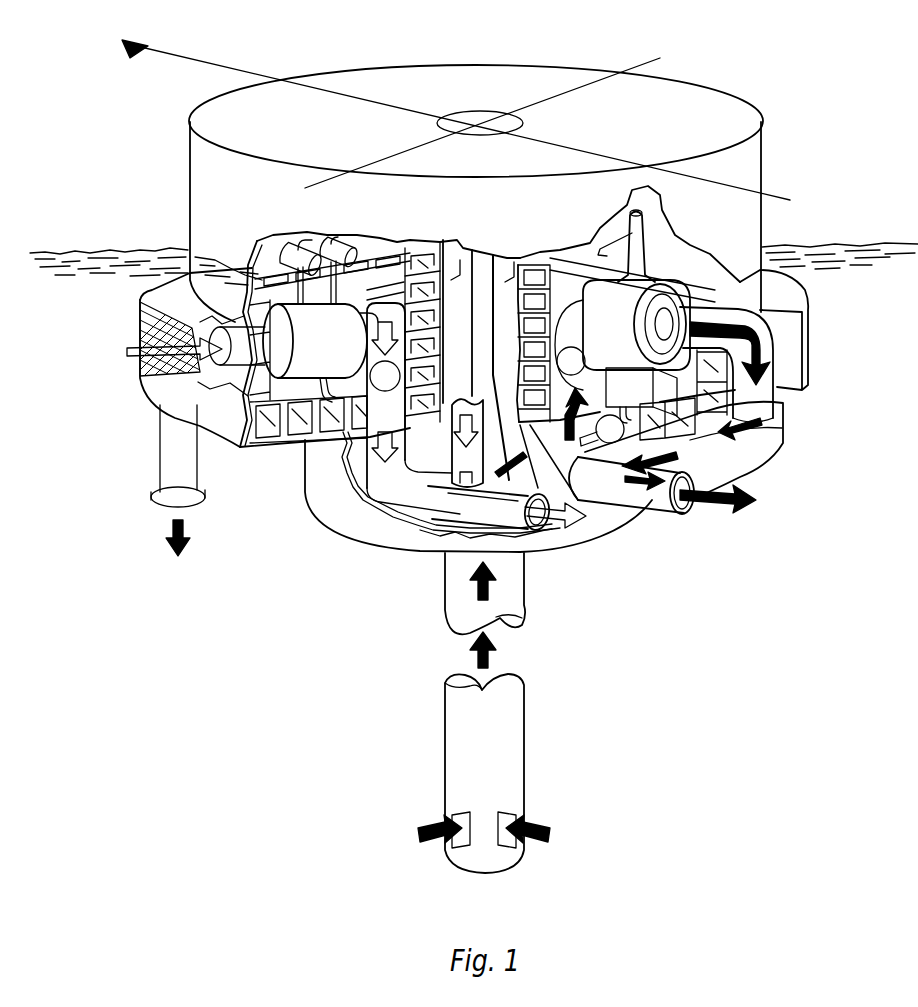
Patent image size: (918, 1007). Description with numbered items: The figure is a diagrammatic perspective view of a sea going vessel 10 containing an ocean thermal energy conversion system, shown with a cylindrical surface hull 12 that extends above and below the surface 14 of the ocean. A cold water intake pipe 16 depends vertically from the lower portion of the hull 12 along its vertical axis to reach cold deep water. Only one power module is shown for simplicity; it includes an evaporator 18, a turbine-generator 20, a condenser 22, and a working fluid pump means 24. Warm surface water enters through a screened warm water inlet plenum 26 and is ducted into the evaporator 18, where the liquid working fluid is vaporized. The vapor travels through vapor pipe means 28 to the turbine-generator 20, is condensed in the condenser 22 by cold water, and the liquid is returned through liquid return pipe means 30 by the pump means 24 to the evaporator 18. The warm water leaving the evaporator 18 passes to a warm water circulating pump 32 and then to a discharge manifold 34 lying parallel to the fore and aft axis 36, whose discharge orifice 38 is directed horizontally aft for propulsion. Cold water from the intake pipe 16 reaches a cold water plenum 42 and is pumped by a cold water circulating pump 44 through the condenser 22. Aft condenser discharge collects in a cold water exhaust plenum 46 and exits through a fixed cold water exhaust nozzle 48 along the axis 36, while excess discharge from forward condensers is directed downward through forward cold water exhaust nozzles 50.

The sea going vessel 10 is at (487, 50).
The cylindrical surface hull 12 is at (738, 111).
The surface of the ocean 14 is at (128, 242).
The cold water intake pipe 16 is at (527, 727).
The evaporator 18 is at (338, 338).
The turbine-generator 20 is at (645, 247).
The condenser 22 is at (621, 326).
The working fluid pump means 24 is at (610, 444).
The warm water inlet plenum 26 is at (152, 383).
The vapor pipe means 28 is at (342, 289).
The liquid return pipe means 30 is at (326, 398).
The warm water circulating pump 32 is at (387, 393).
The discharge manifold 34 is at (388, 491).
The fore and aft axis 36 is at (358, 86).
The discharge orifice 38 is at (554, 522).
The cold water plenum 42 is at (322, 517).
The cold water circulating pump 44 is at (585, 360).
The cold water exhaust plenum 46 is at (785, 440).
The cold water exhaust nozzle 48 is at (688, 500).
The forward cold water exhaust nozzles 50 is at (160, 455).